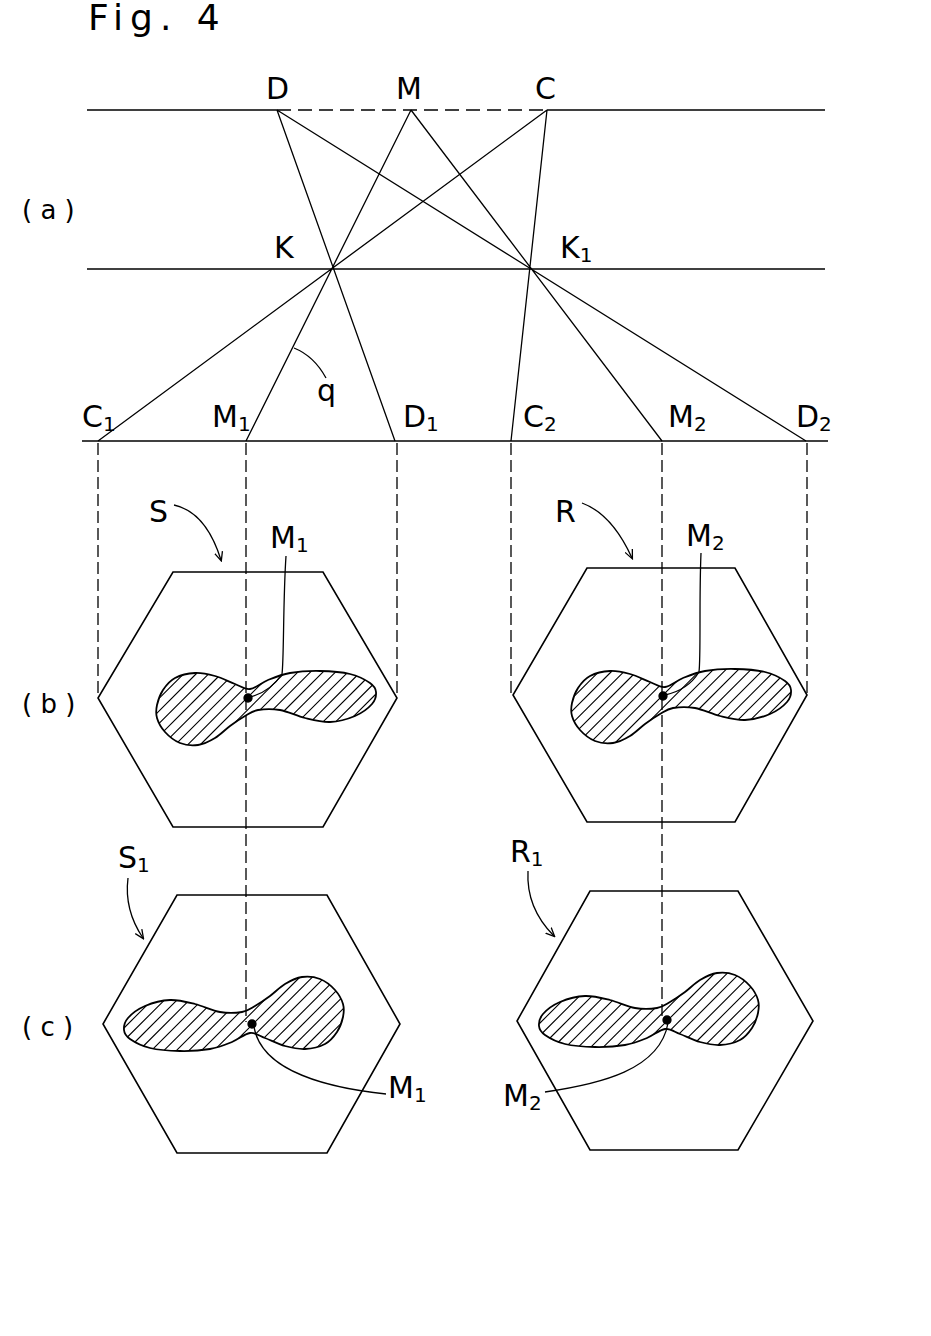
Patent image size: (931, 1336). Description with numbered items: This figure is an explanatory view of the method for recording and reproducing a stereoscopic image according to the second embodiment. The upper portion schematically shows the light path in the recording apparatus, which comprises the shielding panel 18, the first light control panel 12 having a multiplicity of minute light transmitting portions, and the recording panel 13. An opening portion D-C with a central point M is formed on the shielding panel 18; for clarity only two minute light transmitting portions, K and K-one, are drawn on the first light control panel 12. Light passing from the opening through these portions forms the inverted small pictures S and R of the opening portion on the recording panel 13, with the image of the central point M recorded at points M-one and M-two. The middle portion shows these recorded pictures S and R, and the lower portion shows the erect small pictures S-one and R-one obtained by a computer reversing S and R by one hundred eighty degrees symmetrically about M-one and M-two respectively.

The shielding panel 18 is at (704, 110).
The first light control panel 12 is at (714, 269).
The recording panel 13 is at (722, 441).